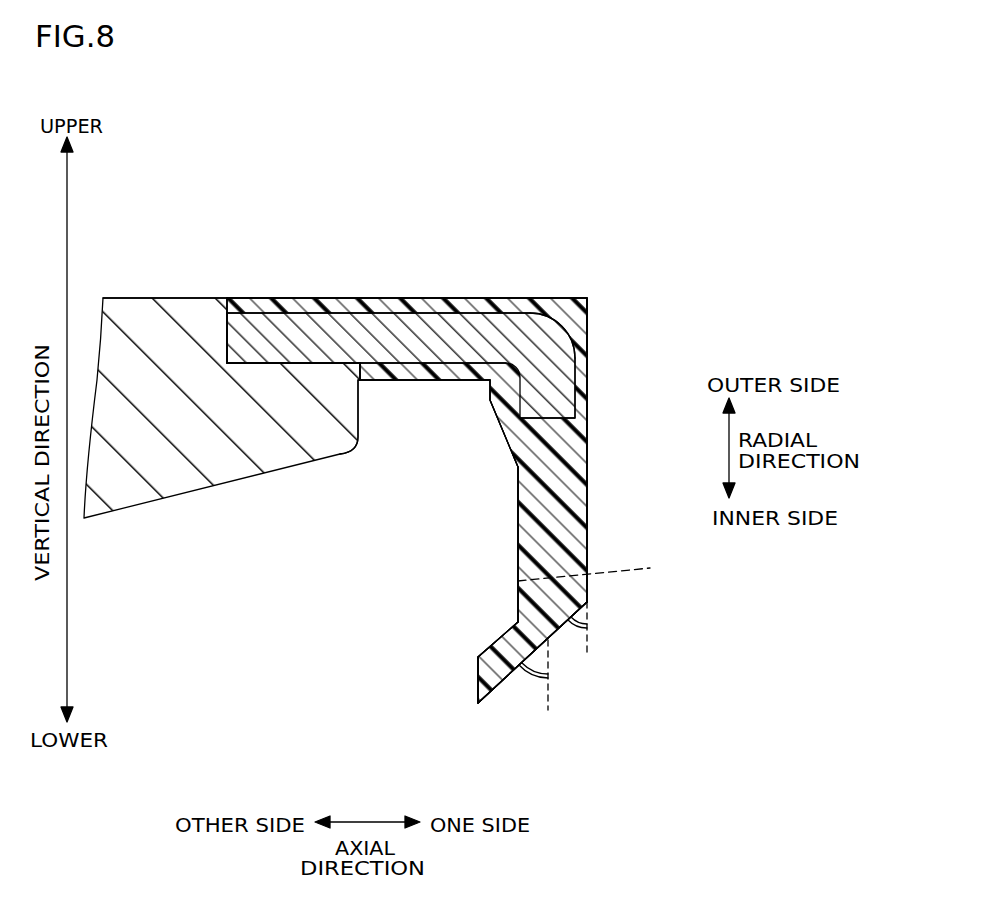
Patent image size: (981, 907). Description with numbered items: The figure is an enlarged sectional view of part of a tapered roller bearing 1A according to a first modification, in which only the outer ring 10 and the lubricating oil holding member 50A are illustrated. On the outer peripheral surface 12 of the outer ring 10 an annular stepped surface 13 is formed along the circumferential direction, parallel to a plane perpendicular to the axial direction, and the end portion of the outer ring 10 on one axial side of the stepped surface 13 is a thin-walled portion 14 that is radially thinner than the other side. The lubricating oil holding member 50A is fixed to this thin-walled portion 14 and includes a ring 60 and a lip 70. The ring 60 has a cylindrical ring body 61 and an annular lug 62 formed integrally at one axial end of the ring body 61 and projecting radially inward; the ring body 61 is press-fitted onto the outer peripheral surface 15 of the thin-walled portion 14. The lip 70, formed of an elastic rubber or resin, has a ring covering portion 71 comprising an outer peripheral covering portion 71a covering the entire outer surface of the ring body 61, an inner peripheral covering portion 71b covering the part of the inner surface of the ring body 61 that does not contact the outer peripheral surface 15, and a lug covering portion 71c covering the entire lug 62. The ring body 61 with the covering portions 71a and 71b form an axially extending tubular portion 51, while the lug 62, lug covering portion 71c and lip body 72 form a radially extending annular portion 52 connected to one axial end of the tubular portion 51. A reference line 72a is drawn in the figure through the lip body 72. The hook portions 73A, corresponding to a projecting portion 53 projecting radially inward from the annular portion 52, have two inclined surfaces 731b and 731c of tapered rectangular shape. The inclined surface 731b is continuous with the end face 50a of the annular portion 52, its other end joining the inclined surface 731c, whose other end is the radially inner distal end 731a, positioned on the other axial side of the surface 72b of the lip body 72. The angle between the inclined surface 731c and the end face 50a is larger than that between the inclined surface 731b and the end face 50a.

The tapered roller bearing 1A is at (615, 175).
The outer ring 10 is at (160, 467).
The outer peripheral surface 12 is at (138, 300).
The stepped surface 13 is at (250, 367).
The thin-walled portion 14 is at (310, 400).
The outer peripheral surface 15 is at (230, 340).
The lubricating oil holding member 50A is at (560, 217).
The end face 50a is at (587, 463).
The tubular portion 51 is at (401, 365).
The annular portion 52 is at (407, 500).
The projecting portion 53 is at (532, 652).
The ring 60 is at (510, 330).
The ring body 61 is at (422, 340).
The lug 62 is at (562, 402).
The lip 70 is at (546, 322).
The ring covering portion 71 is at (585, 302).
The outer peripheral covering portion 71a is at (380, 340).
The inner peripheral covering portion 71b is at (398, 368).
The lug covering portion 71c is at (492, 410).
The lip body 72 is at (550, 512).
The seal lip reference line 72a is at (599, 571).
The surface 72b is at (517, 555).
The hook portions 73A is at (505, 640).
The distal end 731a is at (475, 703).
The inclined surface 731b is at (560, 640).
The inclined surface 731c is at (502, 692).